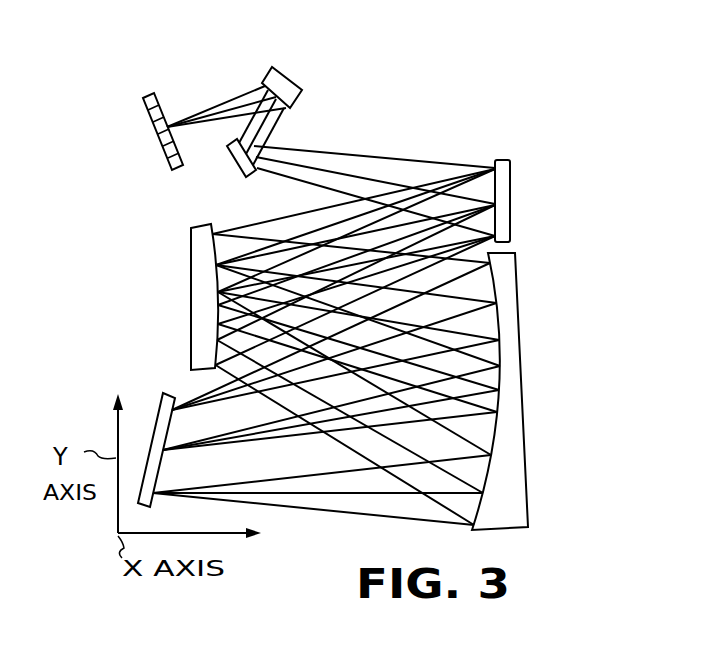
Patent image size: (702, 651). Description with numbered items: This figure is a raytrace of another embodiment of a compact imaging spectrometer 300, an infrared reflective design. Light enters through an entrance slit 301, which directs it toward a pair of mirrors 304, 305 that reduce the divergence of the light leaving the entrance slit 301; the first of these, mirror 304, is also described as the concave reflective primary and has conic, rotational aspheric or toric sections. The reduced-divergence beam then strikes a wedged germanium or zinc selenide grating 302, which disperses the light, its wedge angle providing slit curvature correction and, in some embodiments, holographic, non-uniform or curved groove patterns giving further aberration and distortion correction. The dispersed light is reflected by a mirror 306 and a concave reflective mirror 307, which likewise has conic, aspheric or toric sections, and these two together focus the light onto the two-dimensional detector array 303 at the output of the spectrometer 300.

The compact imaging spectrometer 300 is at (146, 64).
The entrance slit 301 is at (163, 146).
The wedged germanium or zinc selenide grating 302 is at (512, 183).
The two-dimensional detector array 303 is at (162, 392).
The mirror 304 is at (299, 83).
The mirror 305 is at (240, 163).
The mirror 306 is at (189, 272).
The concave reflective mirror 307 is at (520, 337).